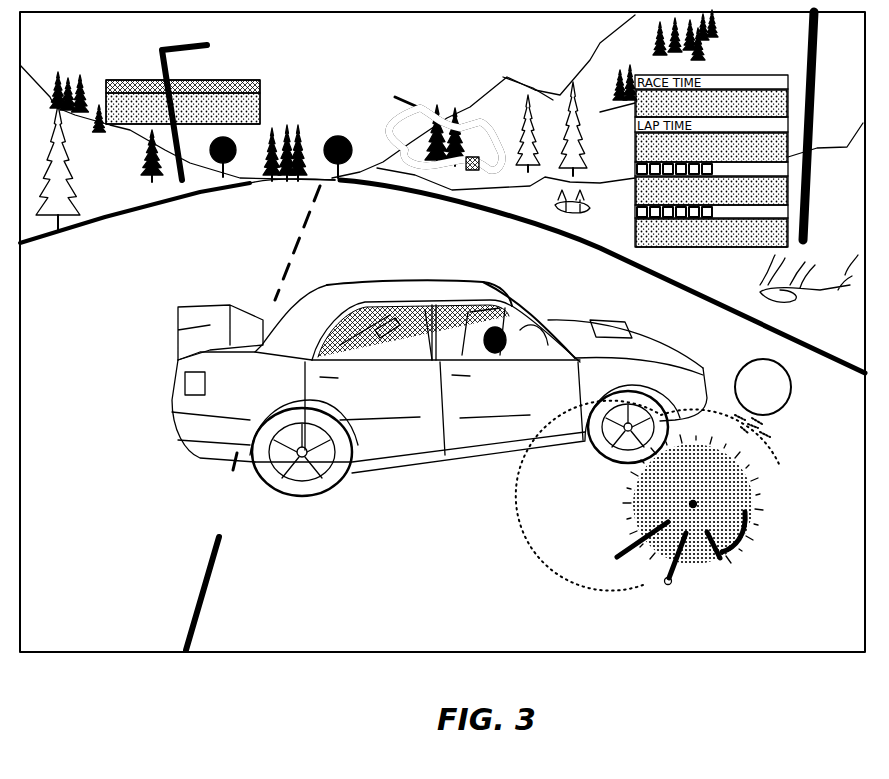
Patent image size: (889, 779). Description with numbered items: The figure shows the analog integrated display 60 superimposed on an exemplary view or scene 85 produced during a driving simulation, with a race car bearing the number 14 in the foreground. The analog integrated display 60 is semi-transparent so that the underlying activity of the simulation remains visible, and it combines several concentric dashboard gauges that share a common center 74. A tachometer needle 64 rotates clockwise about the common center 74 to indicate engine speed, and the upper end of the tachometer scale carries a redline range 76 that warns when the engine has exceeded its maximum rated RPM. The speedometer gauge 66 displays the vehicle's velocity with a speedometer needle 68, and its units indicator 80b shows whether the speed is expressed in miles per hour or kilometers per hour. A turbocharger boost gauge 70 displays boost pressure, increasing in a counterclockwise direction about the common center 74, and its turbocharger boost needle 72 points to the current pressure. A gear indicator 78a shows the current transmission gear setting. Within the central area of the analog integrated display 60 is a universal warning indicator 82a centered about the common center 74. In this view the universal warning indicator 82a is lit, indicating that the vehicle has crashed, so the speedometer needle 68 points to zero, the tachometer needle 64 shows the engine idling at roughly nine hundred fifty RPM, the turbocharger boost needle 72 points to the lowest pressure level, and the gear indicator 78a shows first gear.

The race car 14 is at (439, 388).
The analog integrated display 60 is at (547, 584).
The tachometer needle 64 is at (597, 549).
The speedometer gauge 66 is at (590, 487).
The speedometer needle 68 is at (655, 548).
The turbocharger boost gauge 70 is at (745, 550).
The turbocharger boost needle 72 is at (666, 585).
The common center 74 is at (748, 520).
The redline range 76 is at (768, 428).
The gear indicator 78a is at (745, 361).
The units label 80b is at (714, 583).
The universal warning indicator 82a is at (742, 485).
The scene 85 is at (213, 683).